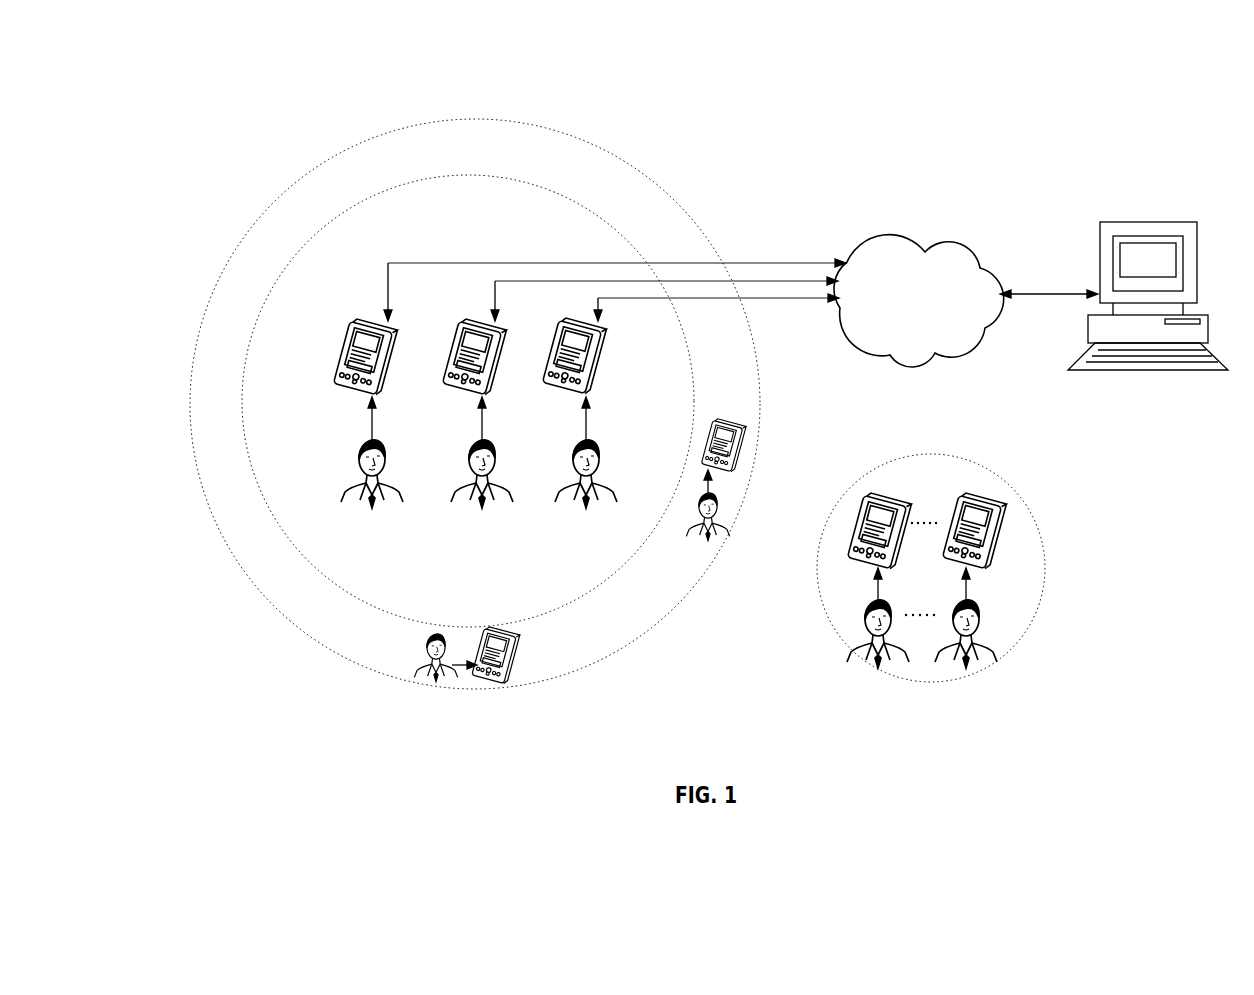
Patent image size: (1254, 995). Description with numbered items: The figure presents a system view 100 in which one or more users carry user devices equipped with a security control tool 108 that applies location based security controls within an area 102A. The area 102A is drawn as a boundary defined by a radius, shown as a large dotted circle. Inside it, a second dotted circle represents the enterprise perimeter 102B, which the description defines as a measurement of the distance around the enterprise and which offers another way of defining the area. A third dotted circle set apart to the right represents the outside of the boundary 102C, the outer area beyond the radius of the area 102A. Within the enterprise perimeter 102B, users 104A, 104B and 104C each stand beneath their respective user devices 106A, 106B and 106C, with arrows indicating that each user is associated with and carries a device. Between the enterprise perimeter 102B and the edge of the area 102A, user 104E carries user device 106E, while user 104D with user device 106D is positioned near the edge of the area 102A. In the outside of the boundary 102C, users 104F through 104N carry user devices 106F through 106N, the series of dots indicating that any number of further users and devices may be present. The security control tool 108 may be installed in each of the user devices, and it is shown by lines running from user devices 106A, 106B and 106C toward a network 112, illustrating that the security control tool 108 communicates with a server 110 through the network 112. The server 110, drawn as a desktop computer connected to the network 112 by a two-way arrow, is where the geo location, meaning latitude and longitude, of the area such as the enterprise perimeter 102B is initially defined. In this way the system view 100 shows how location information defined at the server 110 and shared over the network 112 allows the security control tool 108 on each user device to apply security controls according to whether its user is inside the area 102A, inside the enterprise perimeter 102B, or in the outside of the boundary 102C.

The system view 100 is at (937, 740).
The area 102A is at (612, 152).
The enterprise perimeter 102B is at (528, 185).
The outside of the boundary 102C is at (975, 462).
The user 104A is at (372, 503).
The user 104B is at (482, 503).
The user 104C is at (586, 503).
The user 104D is at (718, 525).
The user 104E is at (436, 680).
The user 104F is at (878, 660).
The user 104N is at (980, 612).
The user device 106A is at (337, 362).
The user device 106B is at (450, 358).
The user device 106C is at (598, 367).
The user device 106D is at (741, 440).
The user device 106E is at (513, 643).
The user device 106F is at (878, 498).
The user device 106N is at (1002, 505).
The security control tool 108 is at (366, 336).
The server 110 is at (1156, 222).
The network 112 is at (906, 240).